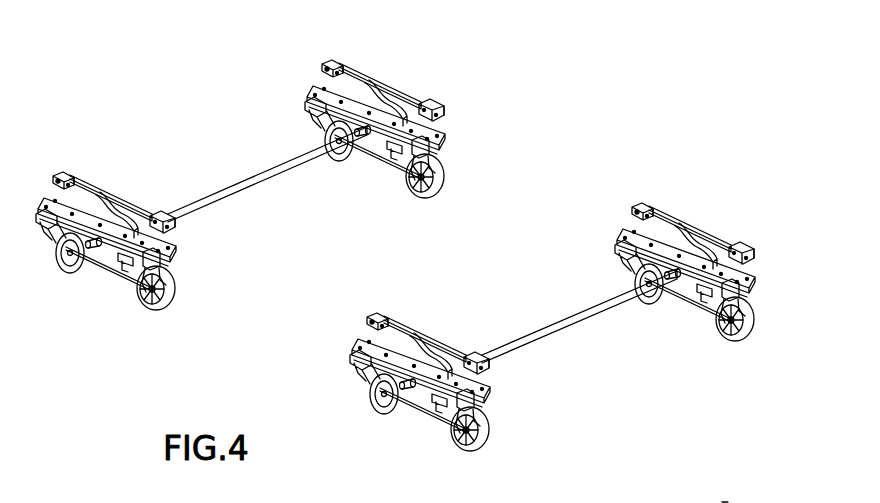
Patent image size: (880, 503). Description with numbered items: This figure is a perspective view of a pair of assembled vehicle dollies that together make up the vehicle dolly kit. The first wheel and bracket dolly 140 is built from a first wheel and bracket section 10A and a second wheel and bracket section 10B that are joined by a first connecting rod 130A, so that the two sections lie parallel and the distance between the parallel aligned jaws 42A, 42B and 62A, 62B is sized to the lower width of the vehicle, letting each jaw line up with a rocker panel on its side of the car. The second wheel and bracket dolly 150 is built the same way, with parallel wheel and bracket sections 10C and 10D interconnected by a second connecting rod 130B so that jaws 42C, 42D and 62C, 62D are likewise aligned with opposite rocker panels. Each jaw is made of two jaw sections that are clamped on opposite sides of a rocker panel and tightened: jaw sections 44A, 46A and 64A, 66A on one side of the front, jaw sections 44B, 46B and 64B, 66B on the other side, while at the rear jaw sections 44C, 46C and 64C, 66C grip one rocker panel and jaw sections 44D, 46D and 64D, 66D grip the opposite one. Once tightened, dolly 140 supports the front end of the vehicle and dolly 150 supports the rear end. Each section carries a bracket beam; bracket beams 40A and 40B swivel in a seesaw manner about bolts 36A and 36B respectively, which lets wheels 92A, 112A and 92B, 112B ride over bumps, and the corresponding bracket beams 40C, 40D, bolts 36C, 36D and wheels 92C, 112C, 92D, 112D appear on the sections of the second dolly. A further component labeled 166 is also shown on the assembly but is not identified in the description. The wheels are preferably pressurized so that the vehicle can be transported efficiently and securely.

The first wheel and bracket section 10A is at (424, 377).
The second wheel and bracket section 10B is at (693, 262).
The wheel and bracket section 10C is at (151, 215).
The wheel and bracket section 10D is at (390, 123).
The bolt 36A is at (367, 382).
The bolt 36B is at (690, 228).
The brace strap 36C is at (100, 204).
The brace strap 36D is at (378, 84).
The bracket beam 40A is at (405, 325).
The bracket beam 40B is at (682, 224).
The tow bar 40C is at (90, 183).
The tow bar 40D is at (352, 78).
The jaw 42A is at (389, 311).
The jaw 42B is at (653, 187).
The jaw 42C is at (76, 163).
The jaw 42D is at (341, 57).
The jaw section 44A is at (366, 324).
The jaw section 44B is at (632, 208).
The jaw section 44C is at (60, 176).
The jaw section 44D is at (322, 70).
The jaw section 46A is at (376, 313).
The jaw section 46B is at (638, 203).
The jaw section 46C is at (63, 178).
The jaw section 46D is at (336, 58).
The jaw 62A is at (505, 383).
The jaw 62B is at (770, 256).
The jaw 62C is at (190, 240).
The jaw 62D is at (452, 108).
The jaw section 64A is at (500, 398).
The jaw section 64B is at (770, 275).
The jaw section 64C is at (185, 255).
The jaw section 64D is at (450, 145).
The jaw section 66A is at (492, 378).
The jaw section 66B is at (755, 246).
The jaw section 66C is at (177, 226).
The jaw section 66D is at (428, 107).
The wheel 92A is at (387, 417).
The wheel 92B is at (670, 306).
The tie rod 92C is at (90, 270).
The tie rod 92D is at (364, 156).
The wheel 112A is at (476, 452).
The wheel 112B is at (759, 341).
The wheel 112C is at (186, 284).
The wheel 112D is at (440, 192).
The first connecting rod 130A is at (532, 308).
The second connecting rod 130B is at (236, 163).
The first wheel and bracket dolly 140 is at (589, 332).
The second wheel and bracket dolly 150 is at (267, 167).
The floor track 166 is at (725, 502).